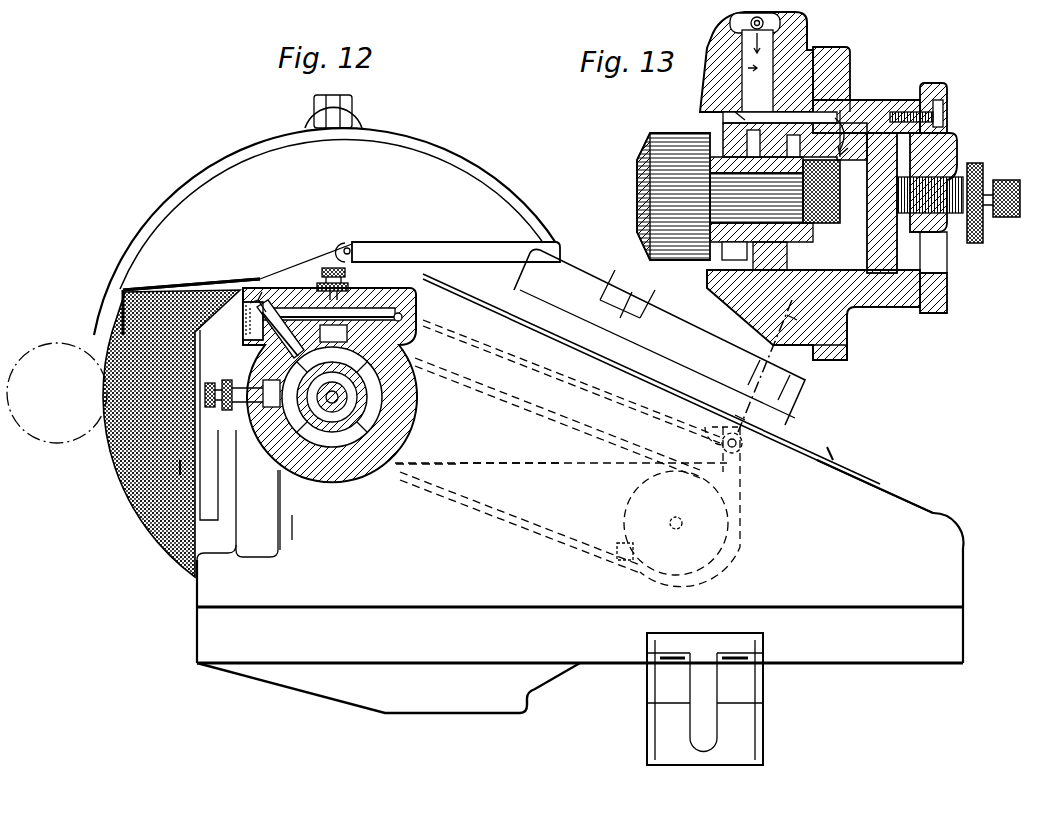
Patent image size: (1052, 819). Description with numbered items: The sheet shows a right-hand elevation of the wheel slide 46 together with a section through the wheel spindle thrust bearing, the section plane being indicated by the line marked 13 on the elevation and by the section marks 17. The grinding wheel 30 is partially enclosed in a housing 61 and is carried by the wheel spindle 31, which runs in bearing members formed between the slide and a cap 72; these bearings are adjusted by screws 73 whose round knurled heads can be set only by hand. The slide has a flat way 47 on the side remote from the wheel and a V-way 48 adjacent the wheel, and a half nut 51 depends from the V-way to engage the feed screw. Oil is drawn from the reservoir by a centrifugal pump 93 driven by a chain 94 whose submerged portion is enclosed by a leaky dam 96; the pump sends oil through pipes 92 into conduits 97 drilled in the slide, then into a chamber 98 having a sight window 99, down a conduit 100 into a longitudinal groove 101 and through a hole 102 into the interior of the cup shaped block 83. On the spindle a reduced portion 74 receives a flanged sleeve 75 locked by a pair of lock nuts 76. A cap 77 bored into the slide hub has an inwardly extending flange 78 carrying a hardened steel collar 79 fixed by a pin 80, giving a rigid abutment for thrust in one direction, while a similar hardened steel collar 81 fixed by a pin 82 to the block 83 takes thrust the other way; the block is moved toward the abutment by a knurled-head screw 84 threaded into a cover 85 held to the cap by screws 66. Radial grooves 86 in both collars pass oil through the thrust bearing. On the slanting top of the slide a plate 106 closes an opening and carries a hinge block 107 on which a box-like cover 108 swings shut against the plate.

In FIG. 12, the housing 61 is at (400, 146).
In FIG. 12, the cap 72 is at (302, 287).
In FIG. 12, the screws 73 is at (337, 266).
In FIG. 12, the conduits 97 is at (399, 312).
In FIG. 12, the chamber 98 is at (262, 300).
In FIG. 13, the chamber 98 is at (738, 23).
In FIG. 12, the window 99 is at (232, 283).
In FIG. 12, the frame member 13 is at (248, 330).
In FIG. 12, the conduit 100 is at (257, 358).
In FIG. 13, the conduit 100 is at (745, 60).
In FIG. 12, the longitudinal groove 101 is at (296, 470).
In FIG. 13, the longitudinal groove 101 is at (845, 117).
In FIG. 12, the wheel slide 46 is at (412, 422).
In FIG. 13, the wheel slide 46 is at (700, 104).
In FIG. 12, the radial grooves 86 is at (396, 464).
In FIG. 13, the radial grooves 86 is at (733, 110).
In FIG. 12, the reduced portion 74 is at (332, 420).
In FIG. 13, the reduced portion 74 is at (707, 195).
In FIG. 12, the grinding wheel 30 is at (135, 447).
In FIG. 12, the flat way 47 is at (372, 605).
In FIG. 12, the V-way 48 is at (208, 646).
In FIG. 12, the half nut 51 is at (745, 693).
In FIG. 12, the pump 93 is at (700, 522).
In FIG. 12, the chain 94 is at (594, 438).
In FIG. 12, the dam 96 is at (530, 462).
In FIG. 12, the pipes 92 is at (603, 392).
In FIG. 12, the block 107 is at (623, 328).
In FIG. 12, the box-like cover 108 is at (788, 404).
In FIG. 12, the cover plate 106 is at (838, 457).
In FIG. 12, the section line 17 is at (808, 379).
In FIG. 13, the wheel spindle 31 is at (648, 168).
In FIG. 13, the inwardly extending flange 78 is at (735, 138).
In FIG. 13, the pin 80 is at (718, 265).
In FIG. 13, the hardened steel collar 81 is at (813, 52).
In FIG. 13, the cap 77 is at (882, 104).
In FIG. 13, the screws 66 is at (947, 107).
In FIG. 13, the hole 102 is at (946, 118).
In FIG. 13, the lock nuts 76 is at (925, 150).
In FIG. 13, the screw 84 is at (960, 180).
In FIG. 13, the cup shaped block 83 is at (880, 253).
In FIG. 13, the cover 85 is at (945, 265).
In FIG. 13, the pin 82 is at (893, 309).
In FIG. 13, the flanged sleeve 75 is at (848, 307).
In FIG. 13, the hardened steel collar 79 is at (852, 335).